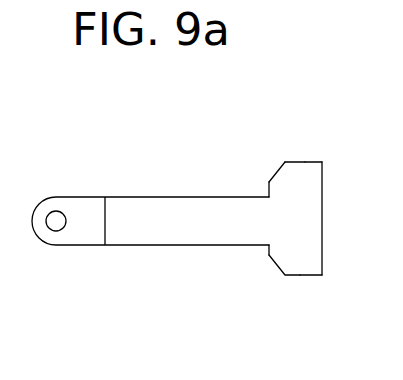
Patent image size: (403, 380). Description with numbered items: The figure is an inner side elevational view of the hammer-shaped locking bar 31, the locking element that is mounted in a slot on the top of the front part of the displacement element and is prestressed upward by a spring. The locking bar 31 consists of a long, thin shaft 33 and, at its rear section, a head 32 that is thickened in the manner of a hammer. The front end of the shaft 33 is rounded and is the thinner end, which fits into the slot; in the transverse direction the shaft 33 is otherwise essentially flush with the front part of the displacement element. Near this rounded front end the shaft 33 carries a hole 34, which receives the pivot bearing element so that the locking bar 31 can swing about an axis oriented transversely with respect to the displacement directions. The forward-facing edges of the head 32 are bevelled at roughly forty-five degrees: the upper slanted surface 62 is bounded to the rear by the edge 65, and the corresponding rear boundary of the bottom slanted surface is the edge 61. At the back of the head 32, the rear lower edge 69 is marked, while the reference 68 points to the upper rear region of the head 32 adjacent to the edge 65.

The locking bar 31 is at (122, 183).
The head 32 is at (308, 213).
The shaft 33 is at (170, 225).
The hole 34 is at (60, 227).
The rear boundary edge of bottom slanted surface 61 is at (283, 278).
The upper slanted surface 62 is at (280, 163).
The rear boundary edge of upper slanted surface 65 is at (282, 162).
The upper corner of head 68 is at (308, 161).
The rear lower edge of head 69 is at (320, 278).